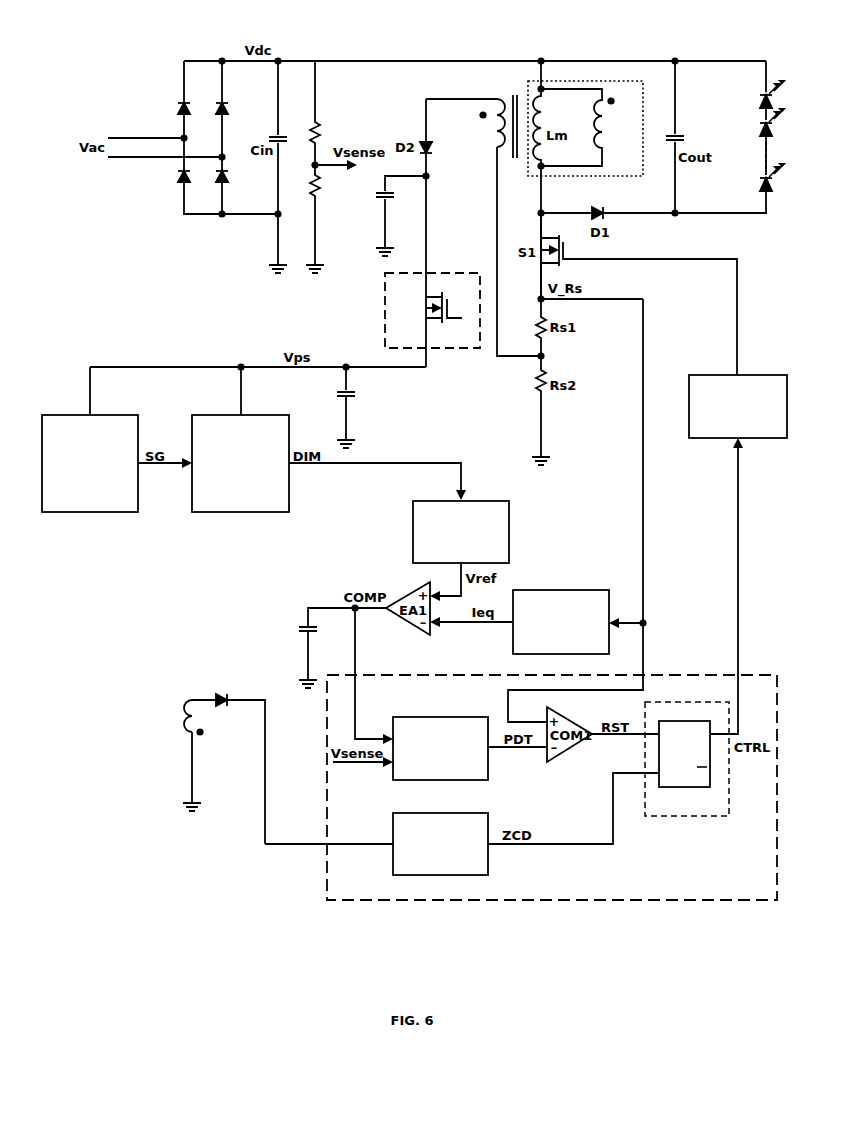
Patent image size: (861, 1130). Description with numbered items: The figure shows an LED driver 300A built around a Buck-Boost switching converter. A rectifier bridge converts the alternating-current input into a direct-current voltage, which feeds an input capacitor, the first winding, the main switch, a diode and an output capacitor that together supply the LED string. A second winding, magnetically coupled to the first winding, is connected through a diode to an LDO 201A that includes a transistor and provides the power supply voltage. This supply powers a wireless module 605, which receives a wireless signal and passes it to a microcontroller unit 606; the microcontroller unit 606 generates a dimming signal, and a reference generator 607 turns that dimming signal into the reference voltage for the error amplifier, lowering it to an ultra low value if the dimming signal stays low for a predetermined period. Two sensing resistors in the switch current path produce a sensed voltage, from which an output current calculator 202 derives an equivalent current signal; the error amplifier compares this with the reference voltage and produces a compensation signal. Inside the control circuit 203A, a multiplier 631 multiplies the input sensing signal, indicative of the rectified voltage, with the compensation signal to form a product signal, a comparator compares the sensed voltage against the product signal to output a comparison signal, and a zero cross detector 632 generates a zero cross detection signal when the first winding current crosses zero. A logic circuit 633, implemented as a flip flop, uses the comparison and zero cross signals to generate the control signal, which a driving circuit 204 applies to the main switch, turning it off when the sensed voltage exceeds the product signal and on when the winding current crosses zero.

The LED driver 300A is at (766, 53).
The LDO 201A is at (385, 318).
The wireless module 605 is at (65, 512).
The microcontroller unit (MCU) 606 is at (221, 512).
The reference generator 607 is at (426, 564).
The output current calculator 202 is at (529, 654).
The driving circuit 204 is at (708, 438).
The control circuit 203A is at (381, 900).
The multiplier 631 is at (407, 780).
The zero cross detector 632 is at (407, 875).
The logic circuit 633 is at (660, 816).